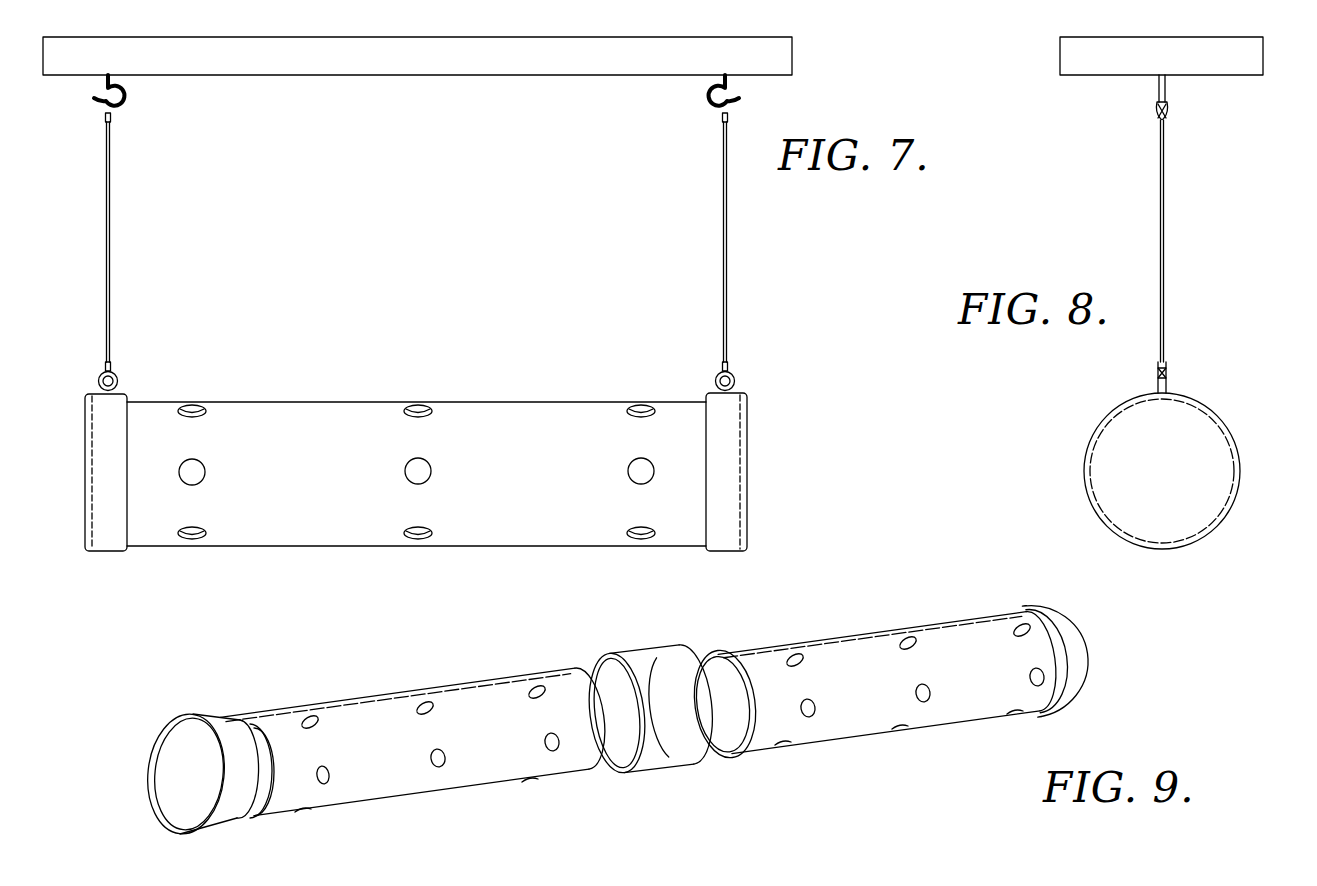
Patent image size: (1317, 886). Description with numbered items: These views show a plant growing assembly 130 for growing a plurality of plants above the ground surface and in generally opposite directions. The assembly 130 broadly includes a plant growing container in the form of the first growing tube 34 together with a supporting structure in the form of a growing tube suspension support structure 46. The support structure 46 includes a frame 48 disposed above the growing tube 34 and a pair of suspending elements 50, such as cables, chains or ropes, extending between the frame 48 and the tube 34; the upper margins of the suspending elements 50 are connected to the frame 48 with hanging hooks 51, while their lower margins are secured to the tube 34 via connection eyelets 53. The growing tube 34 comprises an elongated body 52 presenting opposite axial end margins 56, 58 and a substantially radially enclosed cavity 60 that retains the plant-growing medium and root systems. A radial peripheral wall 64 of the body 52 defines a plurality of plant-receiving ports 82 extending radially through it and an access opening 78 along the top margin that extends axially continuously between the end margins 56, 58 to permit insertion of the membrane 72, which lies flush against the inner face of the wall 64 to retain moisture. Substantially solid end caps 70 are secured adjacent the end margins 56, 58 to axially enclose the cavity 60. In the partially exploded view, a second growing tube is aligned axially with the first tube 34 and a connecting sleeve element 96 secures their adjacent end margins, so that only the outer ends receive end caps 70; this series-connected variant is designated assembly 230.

In FIG. 7, the first growing tube 34 is at (495, 370).
In FIG. 8, the first growing tube 34 is at (1072, 408).
In FIG. 9, the first growing tube 34 is at (486, 646).
In FIG. 7, the growing tube suspension support structure 46 is at (740, 311).
In FIG. 8, the growing tube suspension support structure 46 is at (1180, 191).
In FIG. 7, the frame 48 is at (395, 75).
In FIG. 8, the frame 48 is at (1230, 75).
In FIG. 7, the suspending elements 50 is at (110, 226).
In FIG. 8, the suspending elements 50 is at (1160, 238).
In FIG. 7, the hanging hooks 51 is at (98, 100).
In FIG. 8, the hanging hooks 51 is at (1157, 92).
In FIG. 7, the body 52 is at (322, 406).
In FIG. 9, the body 52 is at (380, 700).
In FIG. 7, the connection eyelets 53 is at (118, 378).
In FIG. 8, the connection eyelets 53 is at (1167, 384).
In FIG. 7, the axial end margin 56 is at (143, 556).
In FIG. 9, the axial end margin 56 is at (283, 829).
In FIG. 7, the axial end margin 58 is at (691, 557).
In FIG. 9, the axial end margin 58 is at (579, 796).
In FIG. 9, the cavity 60 is at (256, 763).
In FIG. 7, the radial peripheral wall 64 is at (320, 520).
In FIG. 9, the radial peripheral wall 64 is at (370, 786).
In FIG. 7, the end cap 70 is at (105, 446).
In FIG. 8, the end cap 70 is at (1205, 505).
In FIG. 9, the end cap 70 is at (162, 779).
In FIG. 9, the membrane 72 is at (270, 794).
In FIG. 9, the access opening 78 is at (320, 703).
In FIG. 7, the plant-receiving ports 82 is at (203, 415).
In FIG. 9, the plant-receiving ports 82 is at (320, 720).
In FIG. 9, the connecting sleeve element 96 is at (653, 660).
In FIG. 7, the plant growing assembly 130 is at (772, 202).
In FIG. 8, the plant growing assembly 130 is at (1085, 150).
In FIG. 9, the feeder system 230 is at (908, 580).